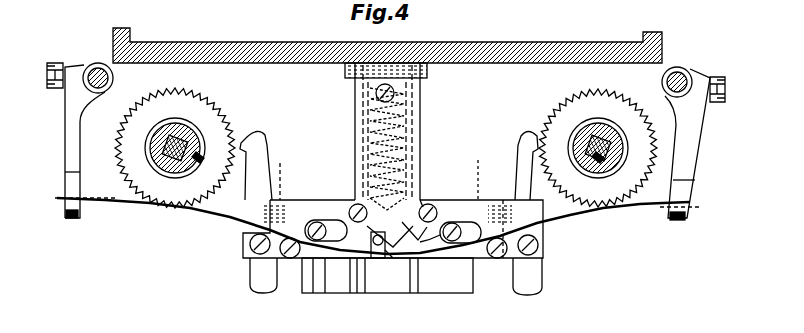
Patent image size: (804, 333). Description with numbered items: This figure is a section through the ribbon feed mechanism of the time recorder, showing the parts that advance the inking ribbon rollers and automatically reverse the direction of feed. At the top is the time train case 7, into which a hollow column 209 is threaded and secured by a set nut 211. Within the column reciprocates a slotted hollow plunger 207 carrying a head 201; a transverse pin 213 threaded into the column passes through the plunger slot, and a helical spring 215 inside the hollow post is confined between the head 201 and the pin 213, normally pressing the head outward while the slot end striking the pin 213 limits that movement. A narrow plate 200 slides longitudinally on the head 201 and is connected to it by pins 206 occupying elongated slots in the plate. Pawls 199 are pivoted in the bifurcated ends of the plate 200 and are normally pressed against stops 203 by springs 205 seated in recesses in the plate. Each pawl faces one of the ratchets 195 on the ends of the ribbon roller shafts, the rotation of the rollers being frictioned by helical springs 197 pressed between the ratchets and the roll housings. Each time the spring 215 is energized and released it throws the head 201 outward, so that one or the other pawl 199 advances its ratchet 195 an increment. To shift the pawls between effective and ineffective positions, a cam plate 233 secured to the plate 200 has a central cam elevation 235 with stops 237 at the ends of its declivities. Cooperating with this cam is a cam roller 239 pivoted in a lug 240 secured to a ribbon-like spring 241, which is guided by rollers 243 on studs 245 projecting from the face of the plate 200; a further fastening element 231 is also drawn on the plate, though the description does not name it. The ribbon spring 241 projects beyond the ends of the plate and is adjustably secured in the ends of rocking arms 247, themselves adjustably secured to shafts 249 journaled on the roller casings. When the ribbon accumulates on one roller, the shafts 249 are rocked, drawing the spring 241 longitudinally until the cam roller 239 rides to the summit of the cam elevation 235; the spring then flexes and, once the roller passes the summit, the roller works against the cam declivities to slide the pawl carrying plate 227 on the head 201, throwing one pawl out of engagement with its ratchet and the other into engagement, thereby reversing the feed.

The time train case 7 is at (559, 45).
The shafts 249 is at (92, 66).
The rocking arms 247 is at (72, 183).
The ratchets 195 is at (210, 106).
The helical springs 197 is at (198, 162).
The ribbon-like spring 241 is at (118, 206).
The pawls 199 is at (262, 142).
The pins 206 is at (479, 160).
The springs 205 is at (282, 165).
The plate 200 is at (330, 208).
The rollers 243 is at (289, 240).
The studs 245 is at (318, 221).
The pivot screw 231 is at (318, 240).
The hollow column 209 is at (421, 120).
The set nut 211 is at (428, 70).
The transverse pin 213 is at (397, 92).
The helical spring 215 is at (406, 155).
The hollow plunger 207 is at (416, 172).
The cam plate 233 is at (422, 203).
The stops 203 is at (283, 258).
The head 201 is at (471, 300).
The central cam elevation 235 is at (466, 290).
The pawl carrying plate 227 is at (490, 262).
The stops 237 is at (363, 229).
The cam roller 239 is at (383, 252).
The lug 240 is at (375, 260).